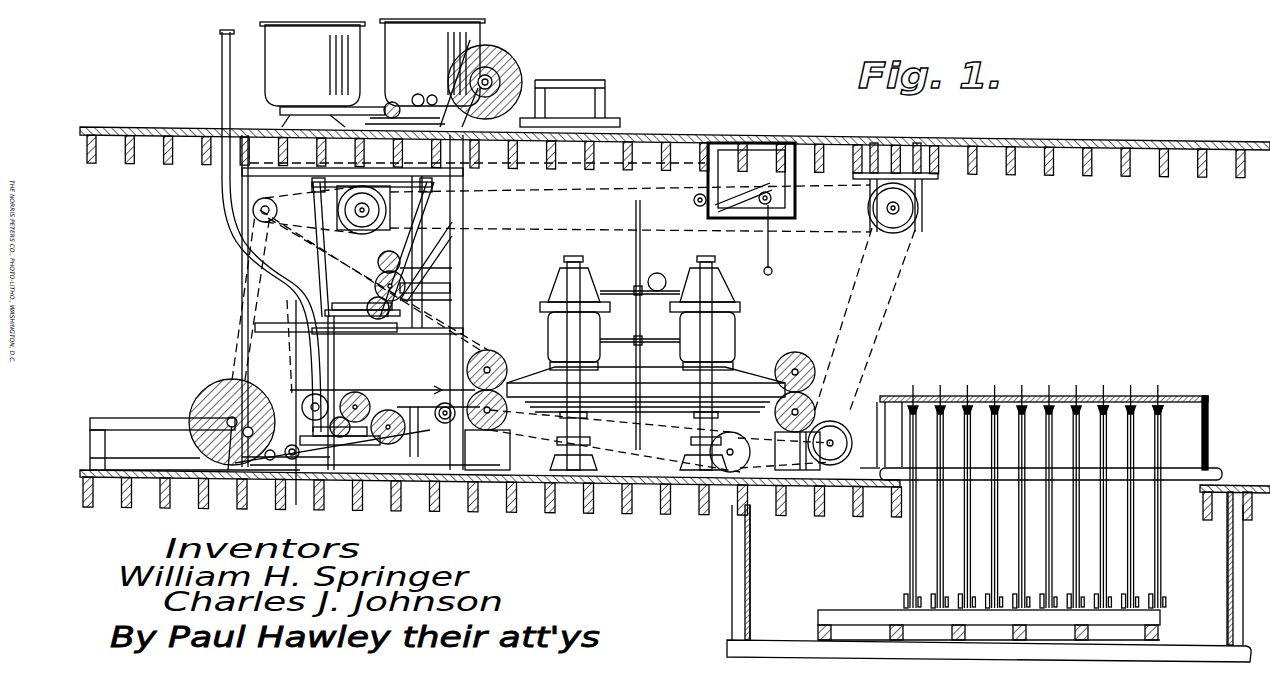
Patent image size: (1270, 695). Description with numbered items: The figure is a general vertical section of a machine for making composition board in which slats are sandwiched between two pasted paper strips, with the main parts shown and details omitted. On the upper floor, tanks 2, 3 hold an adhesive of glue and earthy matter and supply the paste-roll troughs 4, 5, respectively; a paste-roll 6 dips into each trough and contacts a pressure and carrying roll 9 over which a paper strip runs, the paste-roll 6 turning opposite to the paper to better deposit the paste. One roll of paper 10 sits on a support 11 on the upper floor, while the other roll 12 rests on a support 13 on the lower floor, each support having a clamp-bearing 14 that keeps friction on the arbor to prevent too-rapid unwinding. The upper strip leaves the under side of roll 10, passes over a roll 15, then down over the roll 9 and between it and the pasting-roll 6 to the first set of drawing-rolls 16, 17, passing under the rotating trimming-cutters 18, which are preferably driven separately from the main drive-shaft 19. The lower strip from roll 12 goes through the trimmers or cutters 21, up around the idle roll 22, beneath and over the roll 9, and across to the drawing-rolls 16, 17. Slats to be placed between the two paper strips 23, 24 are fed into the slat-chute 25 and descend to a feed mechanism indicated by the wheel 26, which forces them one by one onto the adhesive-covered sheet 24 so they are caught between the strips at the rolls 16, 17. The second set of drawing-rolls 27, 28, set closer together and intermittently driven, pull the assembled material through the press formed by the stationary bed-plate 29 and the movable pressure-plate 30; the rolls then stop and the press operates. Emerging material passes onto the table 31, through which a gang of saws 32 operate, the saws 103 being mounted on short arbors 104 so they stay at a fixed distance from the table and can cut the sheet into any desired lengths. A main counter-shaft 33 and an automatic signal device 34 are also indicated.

The tank 2 is at (522, 518).
The tank 3 is at (432, 62).
The paste-roll trough 4 is at (296, 427).
The paste-roll trough 5 is at (348, 308).
The paste-roll 6 is at (345, 378).
The pressure and carrying roll 9 is at (357, 395).
The roll of paper 10 is at (505, 70).
The support 11 is at (545, 85).
The roll of paper 12 is at (210, 395).
The support 13 is at (128, 428).
The clamp-bearing 14 is at (490, 75).
The roll 15 is at (392, 104).
The drawing-roll 16 is at (492, 355).
The drawing-roll 17 is at (490, 432).
The rotating trimming-cutters 18 is at (452, 95).
The main drive-shaft 19 is at (358, 230).
The trimmers or cutters 21 is at (298, 505).
The idle roll 22 is at (402, 434).
The paper strip 23 is at (465, 330).
The paper strip 24 is at (418, 390).
The slat-chute 25 is at (222, 96).
The wheel 26 is at (284, 397).
The drawing-roll 27 is at (800, 358).
The drawing-roll 28 is at (815, 398).
The stationary bed-plate 29 is at (690, 405).
The movable pressure-plate 30 is at (730, 372).
The table 31 is at (845, 440).
The gang of saws 32 is at (960, 398).
The main counter-shaft 33 is at (920, 215).
The automatic signal device 34 is at (765, 208).
The saws 103 is at (1022, 398).
The short arbors 104 is at (1108, 404).